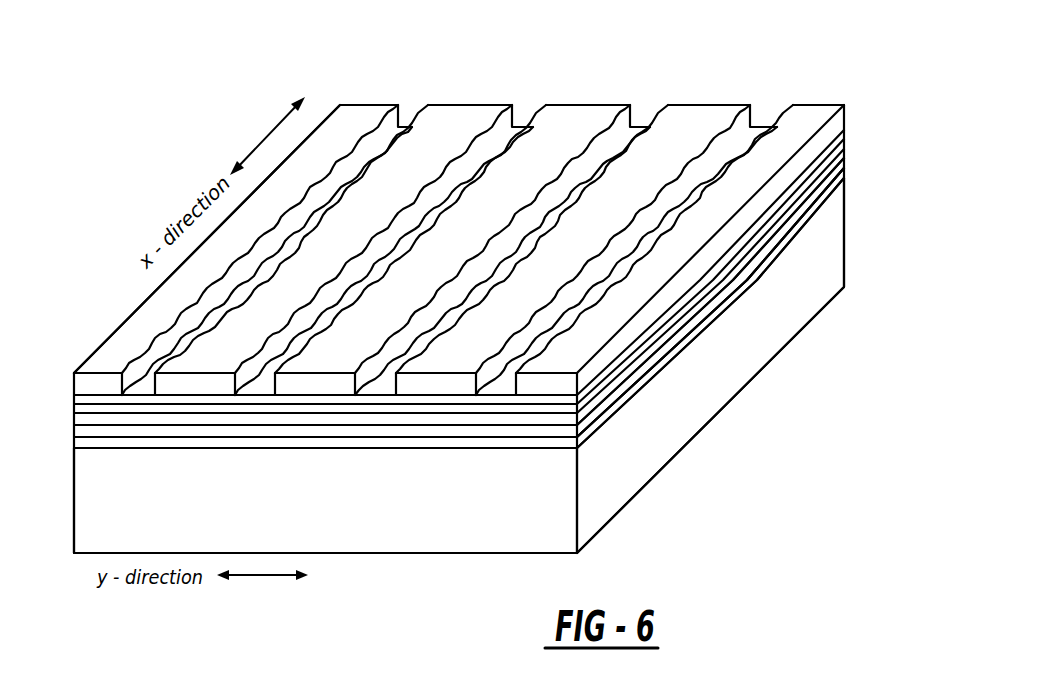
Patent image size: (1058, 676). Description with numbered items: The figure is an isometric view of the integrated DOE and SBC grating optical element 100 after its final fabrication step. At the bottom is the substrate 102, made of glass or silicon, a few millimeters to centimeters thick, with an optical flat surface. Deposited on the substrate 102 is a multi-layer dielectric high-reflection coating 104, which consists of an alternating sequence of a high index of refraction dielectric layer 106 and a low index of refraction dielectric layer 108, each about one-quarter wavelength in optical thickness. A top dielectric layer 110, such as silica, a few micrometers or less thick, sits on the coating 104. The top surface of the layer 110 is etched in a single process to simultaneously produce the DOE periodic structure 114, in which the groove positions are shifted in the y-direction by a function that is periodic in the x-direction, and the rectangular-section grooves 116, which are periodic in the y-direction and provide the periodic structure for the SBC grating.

The integrated DOE and SBC grating optical element 100 is at (602, 40).
The substrate 102 is at (627, 462).
The multi-layer dielectric high-reflection coating 104 is at (850, 147).
The high index of refraction dielectric layer 106 is at (435, 442).
The low index of refraction dielectric layer 108 is at (387, 430).
The top dielectric layer 110 is at (85, 382).
The DOE periodic structure 114 is at (478, 146).
The grooves 116 is at (627, 121).